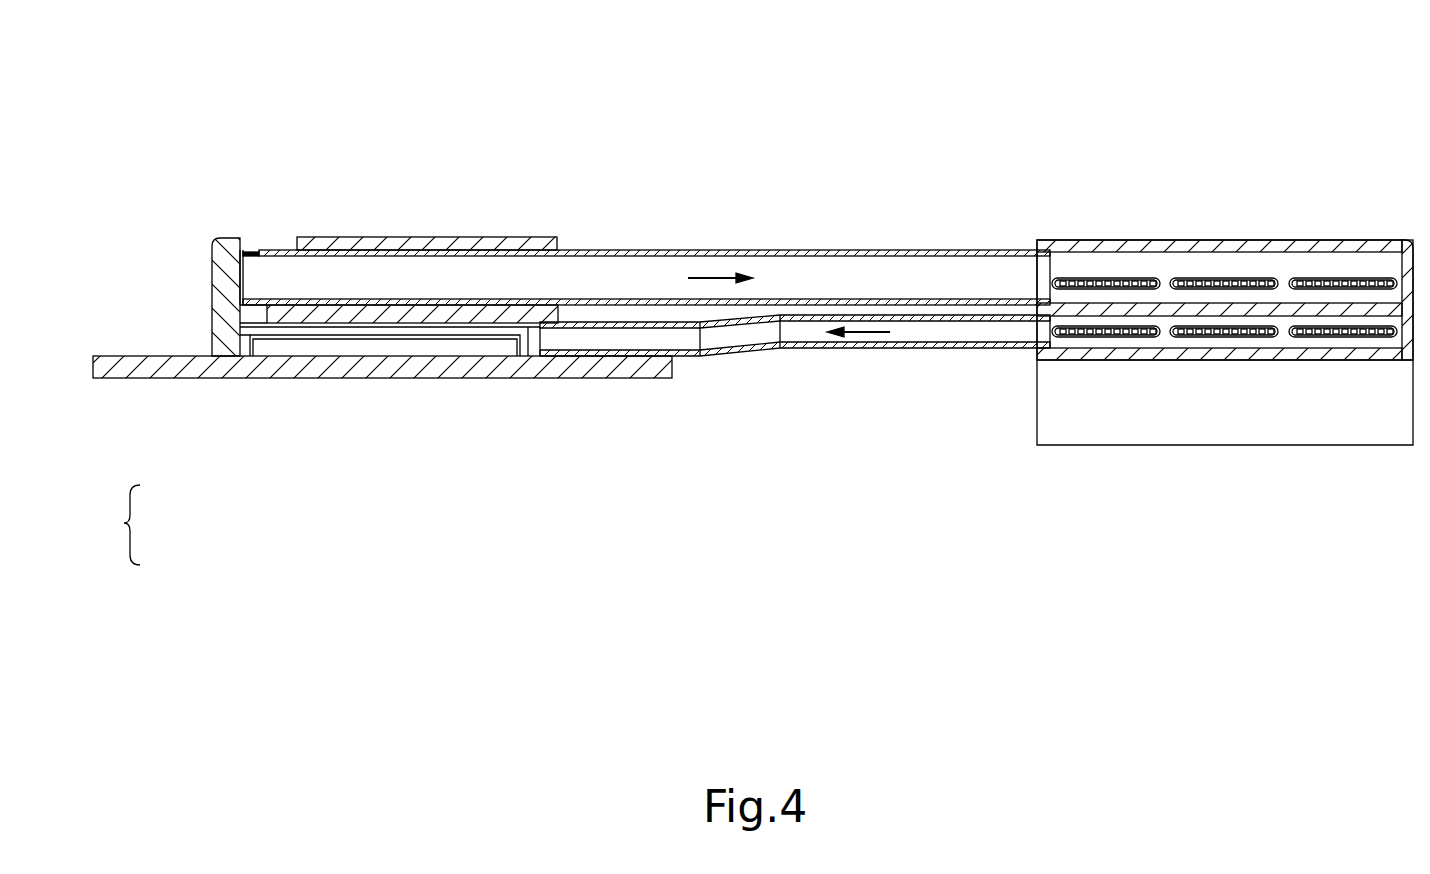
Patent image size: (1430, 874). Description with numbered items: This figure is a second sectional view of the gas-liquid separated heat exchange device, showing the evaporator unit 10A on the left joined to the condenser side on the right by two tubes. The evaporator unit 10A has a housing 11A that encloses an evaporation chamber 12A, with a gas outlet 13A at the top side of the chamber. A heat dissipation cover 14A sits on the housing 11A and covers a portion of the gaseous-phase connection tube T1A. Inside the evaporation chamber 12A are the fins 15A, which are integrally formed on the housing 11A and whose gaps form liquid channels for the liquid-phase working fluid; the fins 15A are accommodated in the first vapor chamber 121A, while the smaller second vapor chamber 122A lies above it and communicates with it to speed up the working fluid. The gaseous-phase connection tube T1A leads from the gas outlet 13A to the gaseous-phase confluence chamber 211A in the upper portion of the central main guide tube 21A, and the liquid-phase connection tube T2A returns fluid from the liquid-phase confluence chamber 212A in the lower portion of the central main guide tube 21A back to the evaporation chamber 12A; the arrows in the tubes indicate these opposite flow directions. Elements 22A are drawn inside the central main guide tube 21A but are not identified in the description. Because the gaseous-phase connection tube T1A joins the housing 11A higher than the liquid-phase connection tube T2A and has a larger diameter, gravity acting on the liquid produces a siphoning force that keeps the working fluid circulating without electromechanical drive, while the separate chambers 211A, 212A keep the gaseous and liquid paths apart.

The evaporator unit 10A is at (388, 378).
The housing 11A is at (222, 283).
The evaporation chamber 12A is at (106, 525).
The first vapor chamber 121A is at (310, 333).
The second vapor chamber 122A is at (256, 317).
The gas outlet 13A is at (256, 252).
The heat dissipation cover 14A is at (430, 237).
The fins 15A is at (492, 348).
The gaseous-phase connection tube T1A is at (822, 275).
The liquid-phase connection tube T2A is at (912, 325).
The central main guide tube 21A is at (1200, 247).
The gaseous-phase confluence chamber 211A is at (1225, 267).
The liquid-phase confluence chamber 212A is at (1282, 322).
The heating elements 22A is at (1108, 343).